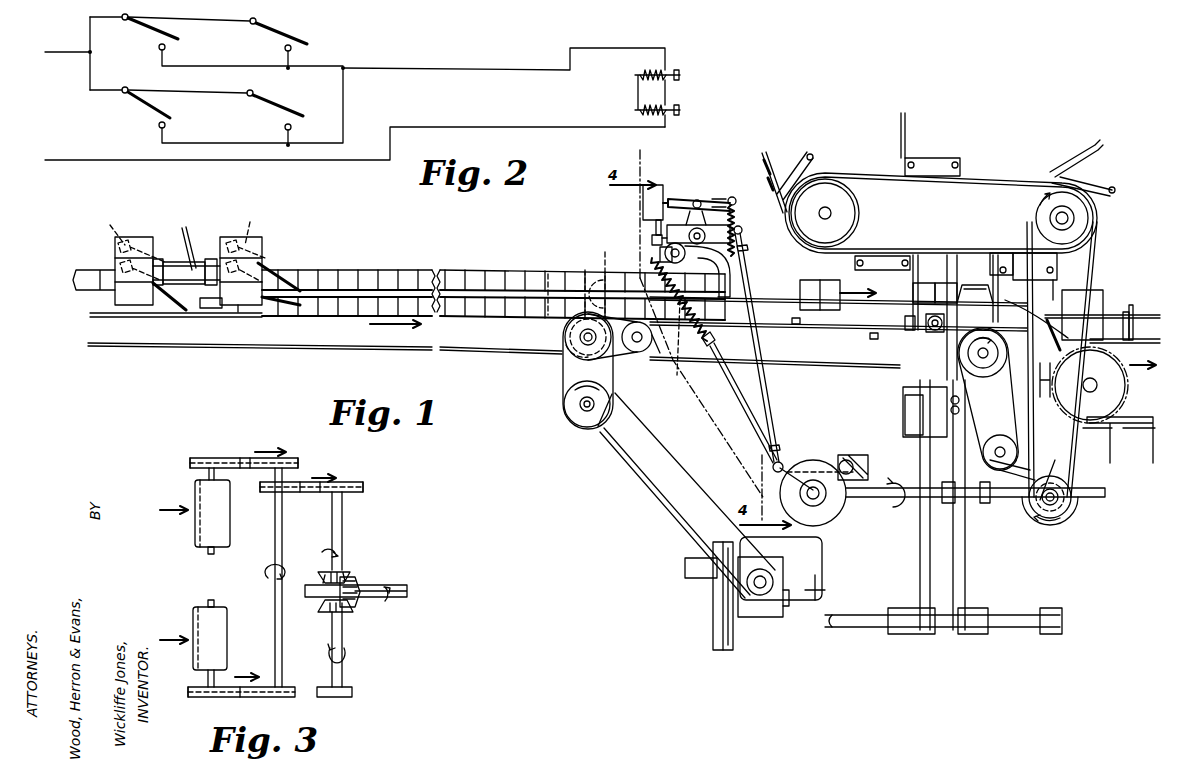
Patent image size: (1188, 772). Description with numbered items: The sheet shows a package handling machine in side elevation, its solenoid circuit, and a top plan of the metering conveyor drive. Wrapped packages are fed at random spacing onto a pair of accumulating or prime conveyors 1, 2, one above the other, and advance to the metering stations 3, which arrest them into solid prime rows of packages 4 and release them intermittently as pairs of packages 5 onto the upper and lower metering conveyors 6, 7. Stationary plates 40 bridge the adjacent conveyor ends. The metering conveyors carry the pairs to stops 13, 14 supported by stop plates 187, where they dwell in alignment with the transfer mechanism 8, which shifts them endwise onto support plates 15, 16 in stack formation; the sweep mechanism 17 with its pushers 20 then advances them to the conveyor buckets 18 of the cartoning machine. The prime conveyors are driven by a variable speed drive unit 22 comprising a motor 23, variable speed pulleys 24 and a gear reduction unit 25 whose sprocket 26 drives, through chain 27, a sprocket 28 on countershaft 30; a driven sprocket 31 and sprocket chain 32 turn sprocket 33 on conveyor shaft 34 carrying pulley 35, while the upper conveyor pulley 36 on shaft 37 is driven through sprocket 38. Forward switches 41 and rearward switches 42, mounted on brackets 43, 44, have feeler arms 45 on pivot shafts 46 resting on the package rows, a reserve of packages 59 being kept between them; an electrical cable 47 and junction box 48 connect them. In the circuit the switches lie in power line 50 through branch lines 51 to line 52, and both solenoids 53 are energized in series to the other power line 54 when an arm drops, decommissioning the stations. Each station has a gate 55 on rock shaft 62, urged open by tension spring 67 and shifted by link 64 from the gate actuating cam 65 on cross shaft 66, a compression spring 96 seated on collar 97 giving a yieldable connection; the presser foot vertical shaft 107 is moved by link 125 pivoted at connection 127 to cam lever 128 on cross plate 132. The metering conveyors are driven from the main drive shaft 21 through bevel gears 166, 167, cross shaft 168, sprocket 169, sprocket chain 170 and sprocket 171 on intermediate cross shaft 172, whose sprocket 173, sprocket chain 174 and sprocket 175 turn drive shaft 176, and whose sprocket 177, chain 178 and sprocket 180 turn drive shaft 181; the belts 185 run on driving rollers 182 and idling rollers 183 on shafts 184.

In FIG. 1, the accumulating or prime conveyor 1 is at (88, 294).
In FIG. 1, the accumulating or prime conveyor 2 is at (202, 325).
In FIG. 1, the metering station 3 is at (708, 194).
In FIG. 1, the packages 4 is at (475, 270).
In FIG. 1, the pairs of packages 5 is at (953, 244).
In FIG. 1, the upper metering conveyor 6 is at (785, 296).
In FIG. 3, the upper metering conveyor 6 is at (185, 537).
In FIG. 1, the lower metering conveyor 7 is at (775, 355).
In FIG. 3, the lower metering conveyor 7 is at (181, 614).
In FIG. 1, the transfer mechanism 8 is at (933, 332).
In FIG. 1, the stop 13 is at (981, 276).
In FIG. 1, the stop 14 is at (990, 290).
In FIG. 1, the support plate 15 is at (888, 298).
In FIG. 1, the support plate 16 is at (915, 318).
In FIG. 1, the sweep mechanism 17 is at (988, 163).
In FIG. 1, the conveyor buckets 18 is at (1127, 298).
In FIG. 1, the pushers 20 is at (778, 161).
In FIG. 1, the main drive shaft 21 is at (1094, 500).
In FIG. 3, the main drive shaft 21 is at (397, 598).
In FIG. 1, the variable speed drive unit 22 is at (820, 567).
In FIG. 1, the motor 23 is at (818, 590).
In FIG. 1, the variable speed pulleys 24 is at (712, 590).
In FIG. 1, the gear reduction unit 25 is at (774, 610).
In FIG. 1, the sprocket 26 is at (758, 598).
In FIG. 1, the chain 27 is at (665, 506).
In FIG. 1, the sprocket 28 is at (578, 412).
In FIG. 1, the countershaft 30 is at (582, 426).
In FIG. 1, the driven sprocket 31 is at (566, 404).
In FIG. 1, the sprocket chain 32 is at (553, 379).
In FIG. 1, the sprocket 33 is at (552, 332).
In FIG. 1, the conveyor shaft 34 is at (580, 343).
In FIG. 1, the pulley 35 is at (554, 353).
In FIG. 1, the pulley 36 is at (558, 272).
In FIG. 1, the shaft 37 is at (585, 285).
In FIG. 1, the sprocket 38 is at (601, 279).
In FIG. 1, the stationary plates 40 is at (634, 304).
In FIG. 2, the forward switches 41 is at (295, 37).
In FIG. 1, the forward switches 41 is at (258, 240).
In FIG. 2, the rearward switches 42 is at (180, 36).
In FIG. 1, the rearward switches 42 is at (141, 237).
In FIG. 1, the bracket 43 is at (241, 310).
In FIG. 1, the bracket 44 is at (120, 314).
In FIG. 1, the feeler arm 45 is at (285, 262).
In FIG. 1, the pivot shaft 46 is at (169, 223).
In FIG. 1, the electrical cable 47 is at (192, 232).
In FIG. 1, the junction box 48 is at (178, 262).
In FIG. 2, the power line 50 is at (60, 52).
In FIG. 2, the branch lines 51 is at (215, 21).
In FIG. 2, the line 52 is at (443, 70).
In FIG. 2, the solenoid 53 is at (679, 74).
In FIG. 1, the solenoid 53 is at (662, 187).
In FIG. 2, the power line 54 is at (82, 160).
In FIG. 1, the gate 55 is at (740, 282).
In FIG. 1, the reserve packages 59 is at (210, 308).
In FIG. 1, the rock shaft 62 is at (682, 257).
In FIG. 1, the link 64 is at (755, 408).
In FIG. 1, the gate actuating cam 65 is at (837, 510).
In FIG. 1, the cross shaft 66 is at (808, 498).
In FIG. 1, the tension spring 67 is at (740, 219).
In FIG. 1, the compression spring 96 is at (716, 338).
In FIG. 1, the collar 97 is at (696, 360).
In FIG. 1, the vertical shaft 107 is at (654, 234).
In FIG. 1, the link 125 is at (772, 392).
In FIG. 1, the pivot connection 127 is at (774, 464).
In FIG. 1, the cam lever 128 is at (830, 462).
In FIG. 1, the cross plate 132 is at (870, 456).
In FIG. 1, the bevel gear 166 is at (1072, 505).
In FIG. 3, the bevel gear 166 is at (356, 579).
In FIG. 3, the bevel gear 167 is at (340, 563).
In FIG. 1, the cross shaft 168 is at (1068, 520).
In FIG. 3, the cross shaft 168 is at (345, 512).
In FIG. 1, the sprocket 169 is at (1048, 520).
In FIG. 3, the sprocket 169 is at (348, 482).
In FIG. 1, the sprocket chain 170 is at (1028, 512).
In FIG. 3, the sprocket chain 170 is at (310, 482).
In FIG. 1, the sprocket 171 is at (1007, 422).
In FIG. 3, the sprocket 171 is at (262, 492).
In FIG. 1, the intermediate cross shaft 172 is at (1000, 495).
In FIG. 3, the intermediate cross shaft 172 is at (283, 547).
In FIG. 3, the sprocket 173 is at (340, 697).
In FIG. 3, the sprocket chain 174 is at (242, 697).
In FIG. 1, the sprocket 175 is at (972, 362).
In FIG. 3, the sprocket 175 is at (192, 697).
In FIG. 1, the drive shaft 176 is at (988, 399).
In FIG. 3, the drive shaft 176 is at (209, 606).
In FIG. 3, the sprocket 177 is at (290, 457).
In FIG. 3, the chain 178 is at (237, 456).
In FIG. 3, the sprocket 180 is at (203, 456).
In FIG. 3, the drive shaft 181 is at (207, 474).
In FIG. 3, the driving pulleys or rollers 182 is at (220, 550).
In FIG. 1, the idling rollers 183 is at (675, 344).
In FIG. 1, the shafts 184 is at (654, 360).
In FIG. 1, the conveyor belts 185 is at (794, 324).
In FIG. 3, the conveyor belts 185 is at (170, 530).
In FIG. 1, the stop plates 187 is at (998, 256).